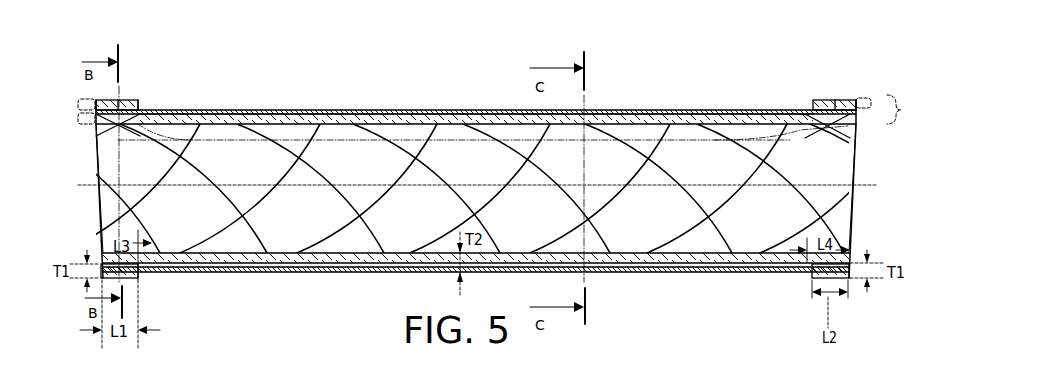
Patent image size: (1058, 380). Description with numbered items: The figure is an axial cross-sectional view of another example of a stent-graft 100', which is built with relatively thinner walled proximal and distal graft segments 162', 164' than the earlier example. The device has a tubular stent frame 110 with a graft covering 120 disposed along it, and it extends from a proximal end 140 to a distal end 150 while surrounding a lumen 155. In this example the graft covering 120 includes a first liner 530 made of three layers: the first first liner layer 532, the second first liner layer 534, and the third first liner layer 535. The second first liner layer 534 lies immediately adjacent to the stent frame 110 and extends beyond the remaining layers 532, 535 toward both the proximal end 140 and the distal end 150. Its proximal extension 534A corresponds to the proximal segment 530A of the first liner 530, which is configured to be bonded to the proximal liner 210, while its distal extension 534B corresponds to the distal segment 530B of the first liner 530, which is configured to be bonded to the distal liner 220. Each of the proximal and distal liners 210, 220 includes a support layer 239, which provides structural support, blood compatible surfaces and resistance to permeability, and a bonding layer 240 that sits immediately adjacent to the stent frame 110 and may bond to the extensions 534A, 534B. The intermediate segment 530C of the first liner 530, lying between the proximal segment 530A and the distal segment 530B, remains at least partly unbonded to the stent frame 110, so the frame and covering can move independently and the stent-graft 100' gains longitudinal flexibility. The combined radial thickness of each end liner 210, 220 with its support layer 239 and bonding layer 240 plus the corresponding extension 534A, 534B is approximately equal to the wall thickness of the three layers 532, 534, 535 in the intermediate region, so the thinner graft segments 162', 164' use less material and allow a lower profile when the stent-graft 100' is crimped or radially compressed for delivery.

The stent-graft 100' is at (476, 147).
The stent frame 110 is at (407, 110).
The graft covering 120 is at (901, 108).
The proximal end 140 is at (80, 203).
The distal end 150 is at (863, 218).
The lumen 155 is at (490, 186).
The proximal graft segment 162' is at (131, 81).
The distal graft segment 164' is at (829, 76).
The proximal liner 210 is at (77, 100).
The distal liner 220 is at (871, 100).
The support layer 239 is at (120, 99).
The bonding layer 240 is at (138, 101).
The first liner 530 is at (78, 119).
The proximal segment 530A is at (159, 145).
The distal segment 530B is at (817, 134).
The intermediate segment of the first liner 530C is at (485, 188).
The first first liner layer 532 is at (272, 110).
The second first liner layer 534 is at (203, 110).
The proximal extension 534A is at (100, 128).
The distal extension 534B is at (852, 127).
The third first liner layer 535 is at (355, 119).